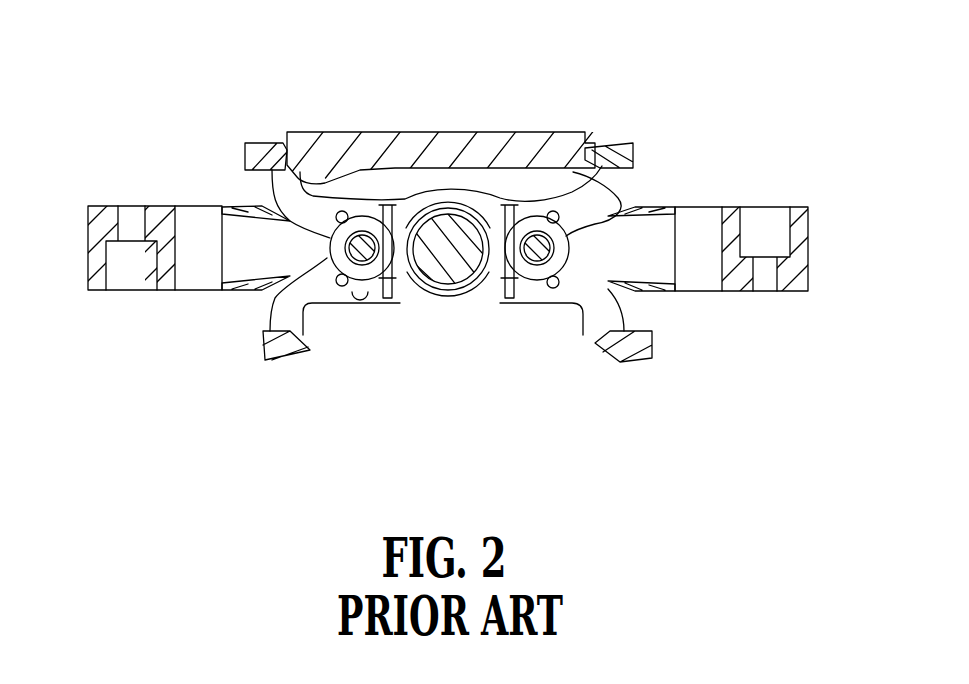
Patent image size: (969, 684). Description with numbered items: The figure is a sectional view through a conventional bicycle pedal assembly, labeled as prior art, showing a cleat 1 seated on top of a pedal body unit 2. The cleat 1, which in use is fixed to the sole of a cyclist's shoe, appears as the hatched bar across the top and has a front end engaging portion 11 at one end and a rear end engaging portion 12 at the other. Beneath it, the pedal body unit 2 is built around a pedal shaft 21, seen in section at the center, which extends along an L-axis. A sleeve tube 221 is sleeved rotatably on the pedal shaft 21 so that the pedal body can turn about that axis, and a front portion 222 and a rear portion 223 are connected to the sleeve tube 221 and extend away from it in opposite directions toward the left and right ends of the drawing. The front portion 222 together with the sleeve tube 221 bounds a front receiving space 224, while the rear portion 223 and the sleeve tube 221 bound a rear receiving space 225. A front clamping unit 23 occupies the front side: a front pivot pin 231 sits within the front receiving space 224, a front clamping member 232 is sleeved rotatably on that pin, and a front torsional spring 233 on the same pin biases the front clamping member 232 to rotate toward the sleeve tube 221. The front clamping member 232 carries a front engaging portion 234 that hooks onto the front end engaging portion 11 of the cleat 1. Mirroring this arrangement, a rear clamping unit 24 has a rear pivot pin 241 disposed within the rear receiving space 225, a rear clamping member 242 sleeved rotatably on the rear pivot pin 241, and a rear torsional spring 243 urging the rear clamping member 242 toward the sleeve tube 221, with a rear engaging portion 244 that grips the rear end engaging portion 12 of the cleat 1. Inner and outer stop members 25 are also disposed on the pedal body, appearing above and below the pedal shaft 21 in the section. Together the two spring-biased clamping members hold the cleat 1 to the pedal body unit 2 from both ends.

The cleat 1 is at (444, 106).
The front end engaging portion 11 is at (324, 143).
The rear end engaging portion 12 is at (569, 155).
The pedal body unit 2 is at (452, 207).
The pedal shaft 21 is at (464, 306).
The sleeve tube 221 is at (475, 266).
The front portion 222 is at (92, 272).
The rear portion 223 is at (808, 272).
The front receiving space 224 is at (189, 275).
The rear receiving space 225 is at (704, 272).
The front clamping unit 23 is at (375, 207).
The front pivot pin 231 is at (379, 252).
The front clamping member 232 is at (268, 188).
The front torsional spring 233 is at (329, 262).
The front engaging portion 234 is at (264, 142).
The rear clamping unit 24 is at (637, 204).
The rear pivot pin 241 is at (539, 256).
The rear clamping member 242 is at (620, 192).
The rear torsional spring 243 is at (566, 262).
The rear engaging portion 244 is at (608, 145).
The inner and outer stop members 25 is at (432, 204).